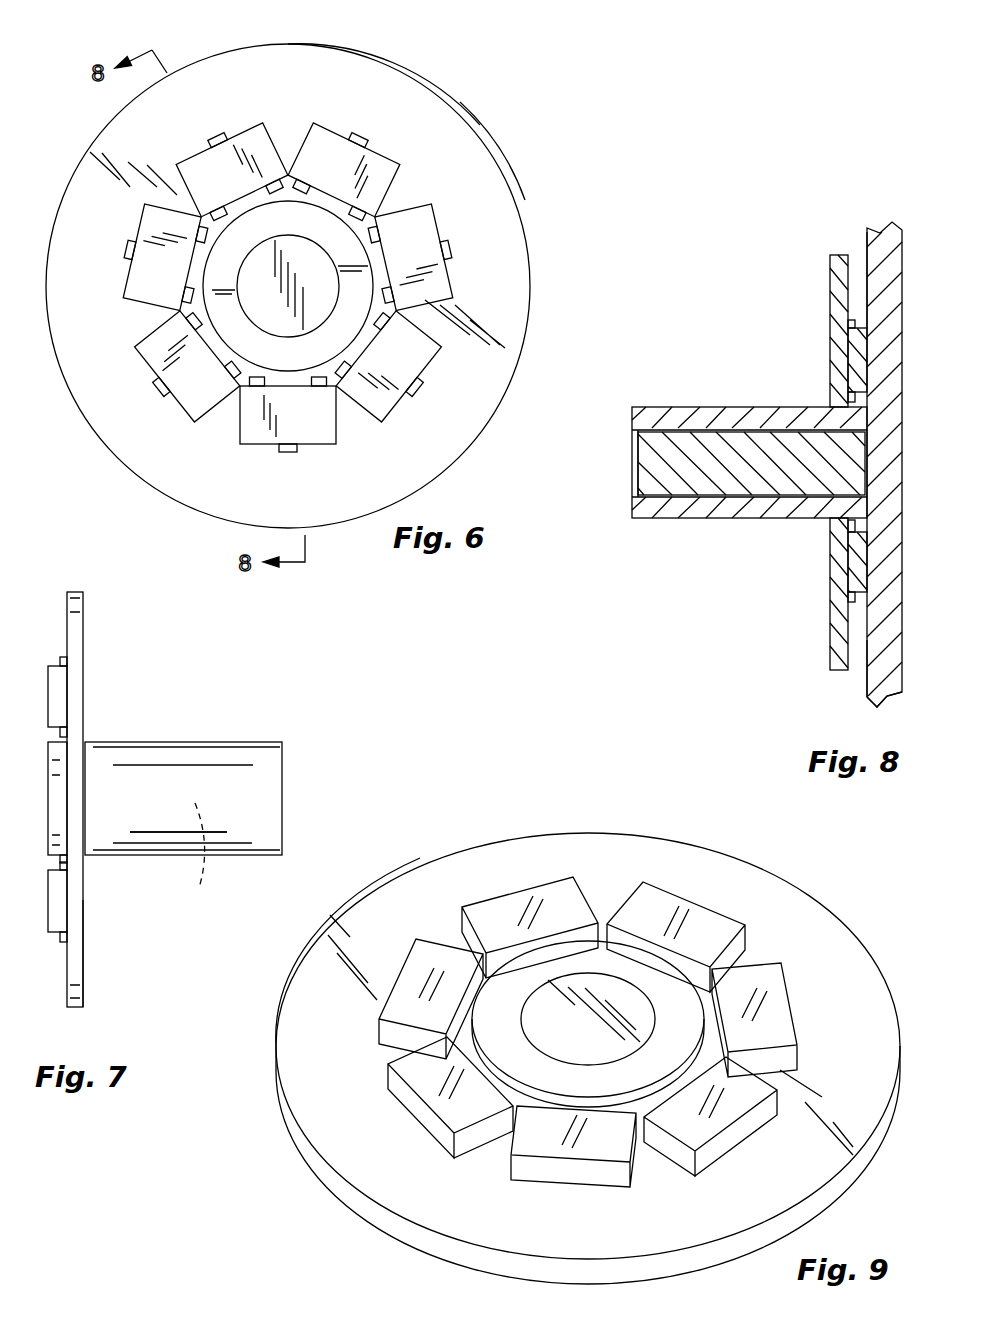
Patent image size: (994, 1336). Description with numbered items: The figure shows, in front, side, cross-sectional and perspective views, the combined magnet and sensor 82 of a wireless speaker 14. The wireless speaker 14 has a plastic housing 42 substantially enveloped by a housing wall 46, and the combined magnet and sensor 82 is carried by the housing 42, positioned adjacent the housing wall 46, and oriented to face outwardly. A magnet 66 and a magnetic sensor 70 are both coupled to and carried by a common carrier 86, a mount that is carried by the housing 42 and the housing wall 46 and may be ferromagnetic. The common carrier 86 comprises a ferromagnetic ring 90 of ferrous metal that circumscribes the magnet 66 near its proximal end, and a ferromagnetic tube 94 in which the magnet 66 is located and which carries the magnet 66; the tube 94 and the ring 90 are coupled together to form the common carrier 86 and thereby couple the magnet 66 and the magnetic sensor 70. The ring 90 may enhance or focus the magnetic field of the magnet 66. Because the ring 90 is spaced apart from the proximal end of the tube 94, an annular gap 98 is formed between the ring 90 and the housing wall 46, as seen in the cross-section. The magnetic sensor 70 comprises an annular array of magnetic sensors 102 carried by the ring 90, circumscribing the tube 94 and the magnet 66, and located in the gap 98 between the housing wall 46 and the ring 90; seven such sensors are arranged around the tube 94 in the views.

In FIG. 8, the wireless speaker 14 is at (872, 685).
In FIG. 8, the housing 42 is at (887, 698).
In FIG. 8, the housing wall 46 is at (890, 242).
In FIG. 6, the magnet 66 is at (262, 280).
In FIG. 7, the magnet 66 is at (185, 863).
In FIG. 8, the magnet 66 is at (703, 473).
In FIG. 9, the magnet 66 is at (607, 990).
In FIG. 6, the magnetic sensor 70 is at (338, 142).
In FIG. 7, the magnetic sensor 70 is at (60, 682).
In FIG. 8, the magnetic sensor 70 is at (858, 352).
In FIG. 9, the magnetic sensor 70 is at (698, 920).
In FIG. 6, the combined magnet and sensor 82 is at (480, 114).
In FIG. 7, the combined magnet and sensor 82 is at (240, 842).
In FIG. 8, the combined magnet and sensor 82 is at (765, 505).
In FIG. 9, the combined magnet and sensor 82 is at (300, 1206).
In FIG. 6, the common carrier 86 is at (492, 203).
In FIG. 7, the common carrier 86 is at (83, 967).
In FIG. 8, the common carrier 86 is at (843, 597).
In FIG. 9, the common carrier 86 is at (417, 1208).
In FIG. 6, the ferromagnetic ring 90 is at (510, 303).
In FIG. 7, the ferromagnetic ring 90 is at (80, 605).
In FIG. 8, the ferromagnetic ring 90 is at (837, 267).
In FIG. 9, the ferromagnetic ring 90 is at (855, 983).
In FIG. 6, the ferromagnetic tube 94 is at (265, 217).
In FIG. 7, the ferromagnetic tube 94 is at (230, 740).
In FIG. 8, the ferromagnetic tube 94 is at (650, 408).
In FIG. 9, the ferromagnetic tube 94 is at (513, 983).
In FIG. 8, the annular gap 98 is at (857, 262).
In FIG. 6, the array of magnetic sensors 102 is at (415, 355).
In FIG. 8, the array of magnetic sensors 102 is at (853, 392).
In FIG. 9, the array of magnetic sensors 102 is at (410, 976).